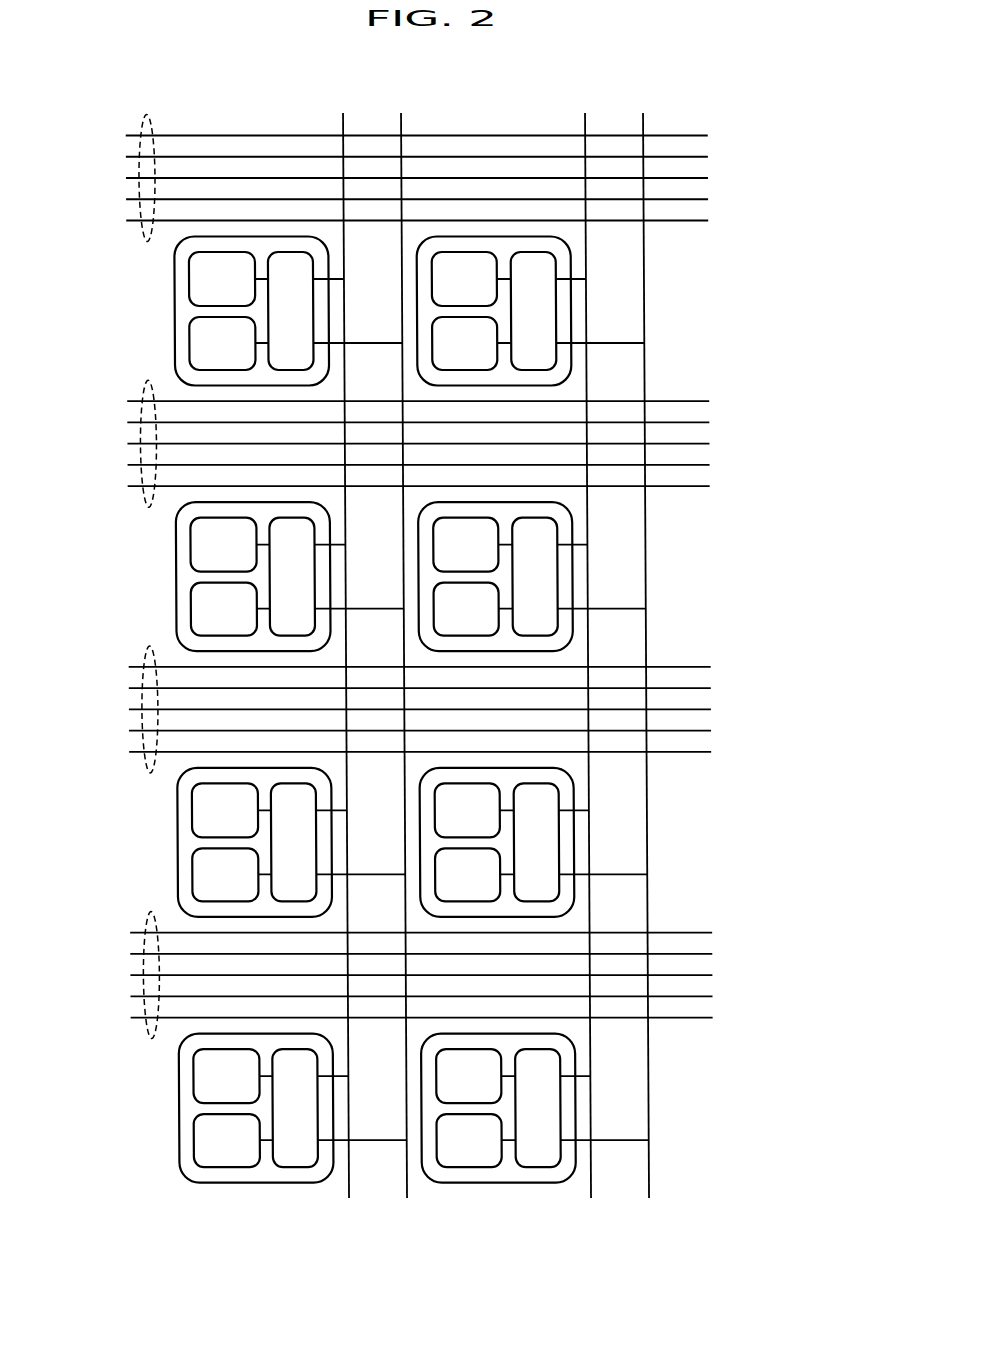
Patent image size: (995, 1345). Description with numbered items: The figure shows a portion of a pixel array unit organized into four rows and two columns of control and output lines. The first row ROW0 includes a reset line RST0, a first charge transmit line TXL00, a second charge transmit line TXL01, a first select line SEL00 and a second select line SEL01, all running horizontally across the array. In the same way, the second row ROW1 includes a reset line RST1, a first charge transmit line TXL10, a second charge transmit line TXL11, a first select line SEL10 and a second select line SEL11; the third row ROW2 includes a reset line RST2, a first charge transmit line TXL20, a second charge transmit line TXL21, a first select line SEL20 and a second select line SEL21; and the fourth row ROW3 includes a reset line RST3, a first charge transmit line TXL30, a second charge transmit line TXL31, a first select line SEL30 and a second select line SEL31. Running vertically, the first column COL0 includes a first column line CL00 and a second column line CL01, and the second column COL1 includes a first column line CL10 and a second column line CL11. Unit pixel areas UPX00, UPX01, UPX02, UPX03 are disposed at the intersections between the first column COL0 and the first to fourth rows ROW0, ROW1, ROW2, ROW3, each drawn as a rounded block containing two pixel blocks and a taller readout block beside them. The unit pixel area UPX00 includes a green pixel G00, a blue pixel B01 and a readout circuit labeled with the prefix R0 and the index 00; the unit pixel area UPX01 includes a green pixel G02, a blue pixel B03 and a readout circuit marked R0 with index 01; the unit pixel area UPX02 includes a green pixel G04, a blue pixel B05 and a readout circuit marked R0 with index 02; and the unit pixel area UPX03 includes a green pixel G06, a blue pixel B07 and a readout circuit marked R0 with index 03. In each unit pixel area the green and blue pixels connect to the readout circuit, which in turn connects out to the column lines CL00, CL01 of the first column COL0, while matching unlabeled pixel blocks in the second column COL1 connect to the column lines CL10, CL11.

The first row ROW0 is at (415, 178).
The second row ROW1 is at (416, 443).
The third row ROW2 is at (418, 709).
The fourth row ROW3 is at (419, 975).
The reset line RST0 is at (445, 136).
The second charge transmit line TXL01 is at (451, 157).
The first charge transmit line TXL00 is at (451, 179).
The second select line SEL01 is at (451, 200).
The first select line SEL00 is at (452, 221).
The reset line RST1 is at (446, 402).
The second charge transmit line TXL11 is at (452, 423).
The first charge transmit line TXL10 is at (452, 444).
The second select line SEL11 is at (453, 465).
The first select line SEL10 is at (454, 487).
The reset line RST2 is at (448, 667).
The second charge transmit line TXL21 is at (454, 689).
The first charge transmit line TXL20 is at (454, 710).
The second select line SEL21 is at (454, 731).
The first select line SEL20 is at (455, 752).
The reset line RST3 is at (449, 933).
The second charge transmit line TXL31 is at (455, 954).
The first charge transmit line TXL30 is at (455, 976).
The second select line SEL31 is at (455, 997).
The first select line SEL30 is at (457, 1018).
The first column COL0 is at (251, 655).
The second column COL1 is at (547, 655).
The first column line CL00 is at (344, 669).
The second column line CL01 is at (408, 669).
The first column line CL10 is at (587, 669).
The second column line CL11 is at (650, 669).
The unit pixel area UPX00 is at (173, 307).
The unit pixel area UPX01 is at (173, 573).
The unit pixel area UPX02 is at (173, 838).
The unit pixel area UPX03 is at (173, 1104).
The green pixel G00 is at (222, 279).
The blue pixel B01 is at (222, 343).
The green pixel G02 is at (223, 545).
The blue pixel B03 is at (224, 609).
The green pixel G04 is at (225, 810).
The blue pixel B05 is at (225, 874).
The green pixel G06 is at (226, 1076).
The blue pixel B07 is at (227, 1140).
The readout circuit 00 is at (291, 311).
The readout circuit 01 is at (292, 577).
The readout circuit 02 is at (294, 842).
The readout circuit 03 is at (295, 1108).
The readout circuit R0 is at (290, 343).